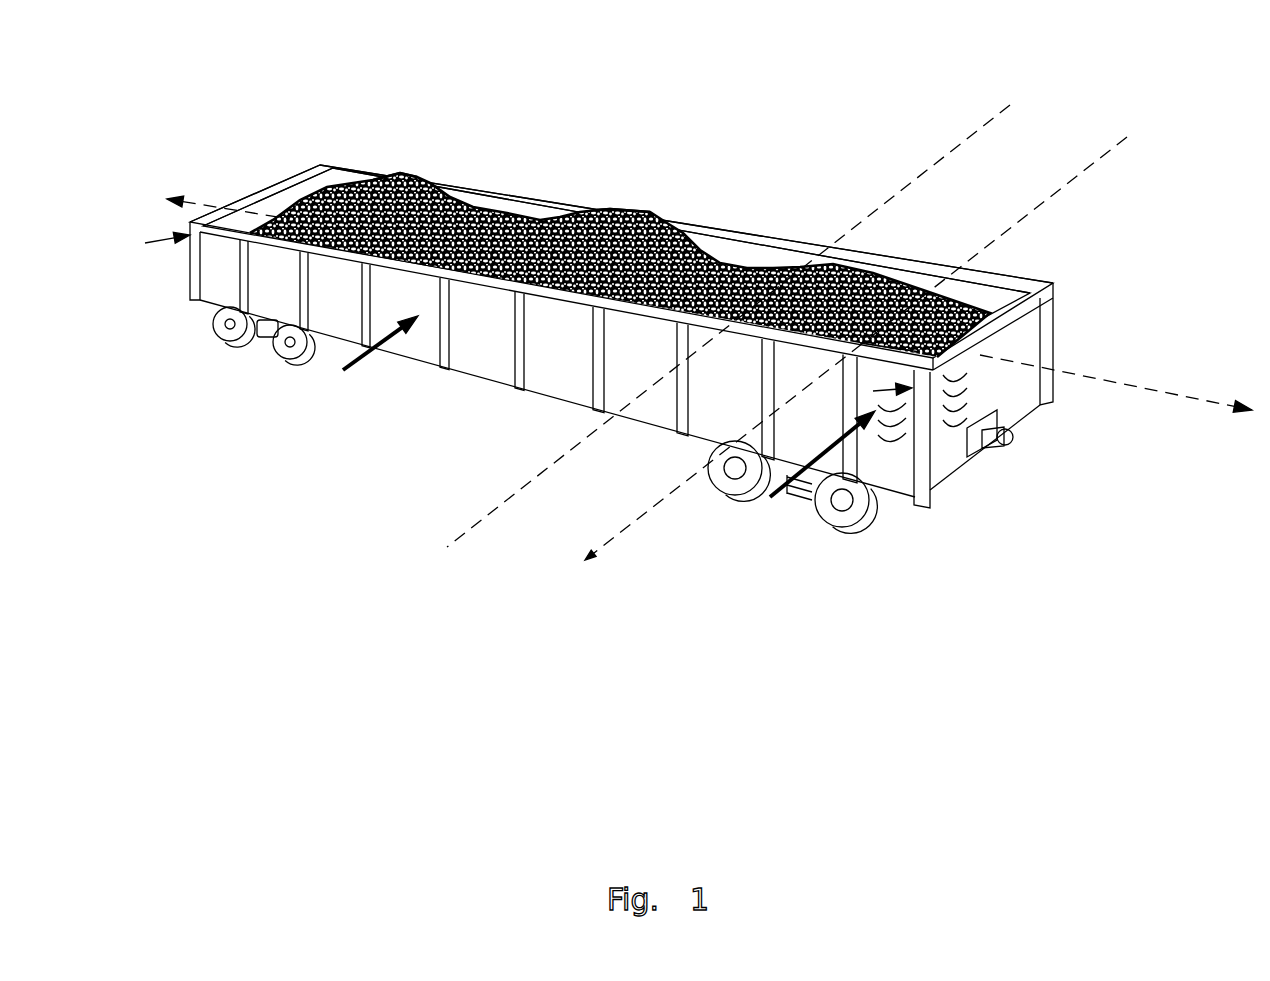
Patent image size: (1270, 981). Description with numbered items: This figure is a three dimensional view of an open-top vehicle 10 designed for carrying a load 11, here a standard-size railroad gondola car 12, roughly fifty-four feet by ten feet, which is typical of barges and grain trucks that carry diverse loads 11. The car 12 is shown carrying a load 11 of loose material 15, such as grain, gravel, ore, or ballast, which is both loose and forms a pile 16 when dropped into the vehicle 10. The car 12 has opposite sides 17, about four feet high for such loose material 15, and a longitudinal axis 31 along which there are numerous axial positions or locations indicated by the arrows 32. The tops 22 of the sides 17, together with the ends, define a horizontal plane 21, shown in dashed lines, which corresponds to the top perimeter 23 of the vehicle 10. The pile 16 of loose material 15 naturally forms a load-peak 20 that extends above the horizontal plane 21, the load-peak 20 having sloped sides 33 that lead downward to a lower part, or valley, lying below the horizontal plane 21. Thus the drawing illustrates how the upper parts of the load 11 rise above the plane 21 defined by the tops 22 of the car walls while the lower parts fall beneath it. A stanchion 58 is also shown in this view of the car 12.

The open-top vehicle 10 is at (350, 150).
The load 11 is at (284, 199).
The gondola car 12 is at (407, 348).
The loose material 15 is at (460, 198).
The pile 16 is at (402, 157).
The side 17 is at (770, 252).
The load-peak 20 is at (441, 158).
The horizontal plane 21 is at (590, 563).
The top 22 is at (807, 263).
The top perimeter 23 is at (1051, 267).
The longitudinal axis 31 is at (1097, 384).
The arrows 32 is at (612, 421).
The sloped sides 33 is at (684, 228).
The stanchion 58 is at (527, 310).